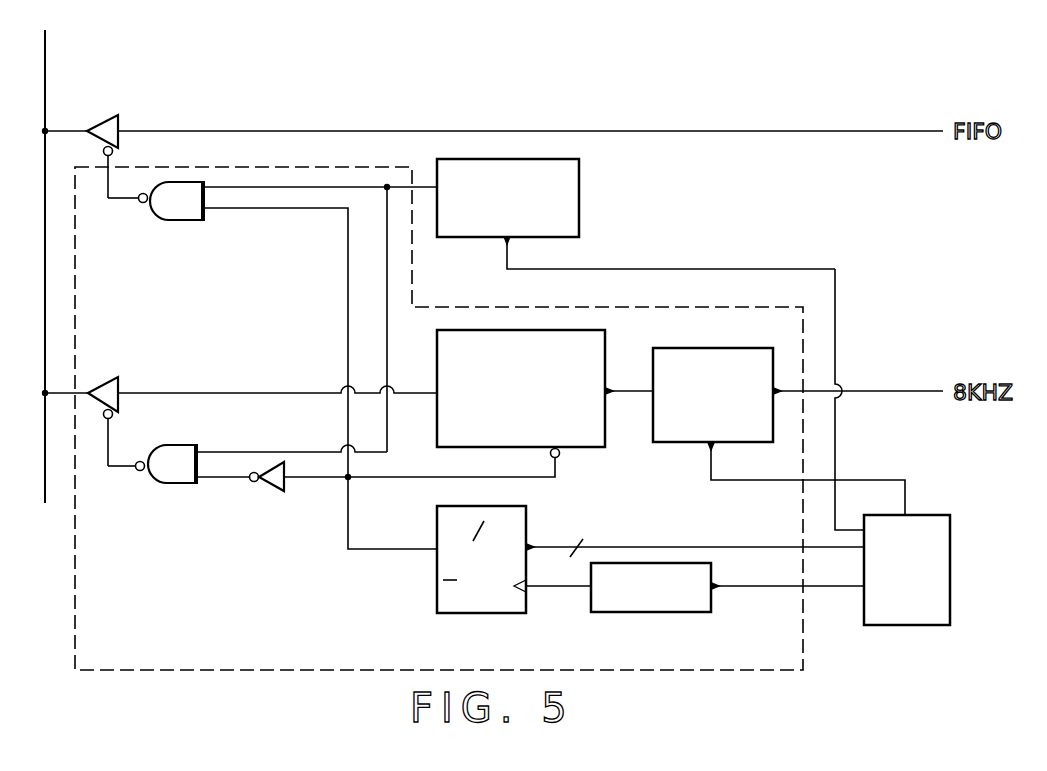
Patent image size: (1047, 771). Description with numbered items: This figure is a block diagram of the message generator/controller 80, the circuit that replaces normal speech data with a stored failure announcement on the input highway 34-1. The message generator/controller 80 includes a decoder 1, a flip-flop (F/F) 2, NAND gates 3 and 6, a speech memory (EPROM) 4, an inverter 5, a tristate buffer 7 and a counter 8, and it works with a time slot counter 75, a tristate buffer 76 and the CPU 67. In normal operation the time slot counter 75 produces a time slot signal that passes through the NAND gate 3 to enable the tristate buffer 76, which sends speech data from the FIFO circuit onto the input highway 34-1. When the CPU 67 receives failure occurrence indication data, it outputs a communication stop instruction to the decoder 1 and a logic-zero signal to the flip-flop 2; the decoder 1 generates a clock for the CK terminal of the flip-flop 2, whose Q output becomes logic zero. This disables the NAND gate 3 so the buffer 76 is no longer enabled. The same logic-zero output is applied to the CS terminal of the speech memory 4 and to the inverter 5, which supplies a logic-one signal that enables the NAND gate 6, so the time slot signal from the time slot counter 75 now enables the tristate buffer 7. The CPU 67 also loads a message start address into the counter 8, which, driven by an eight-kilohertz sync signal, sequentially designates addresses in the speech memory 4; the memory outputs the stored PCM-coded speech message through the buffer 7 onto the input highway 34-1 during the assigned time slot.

The input highway 34-1 is at (45, 47).
The tristate buffer 76 is at (119, 117).
The NAND gate 3 is at (177, 221).
The time slot counter 75 is at (580, 193).
The tristate buffer 7 is at (119, 380).
The NAND gate 6 is at (190, 444).
The inverter 5 is at (272, 492).
The speech memory (EPROM) 4 is at (606, 333).
The counter 8 is at (720, 347).
The flip-flop (F/F) 2 is at (483, 614).
The decoder 1 is at (650, 613).
The CPU 67 is at (951, 556).
The message generator/controller 80 is at (803, 650).